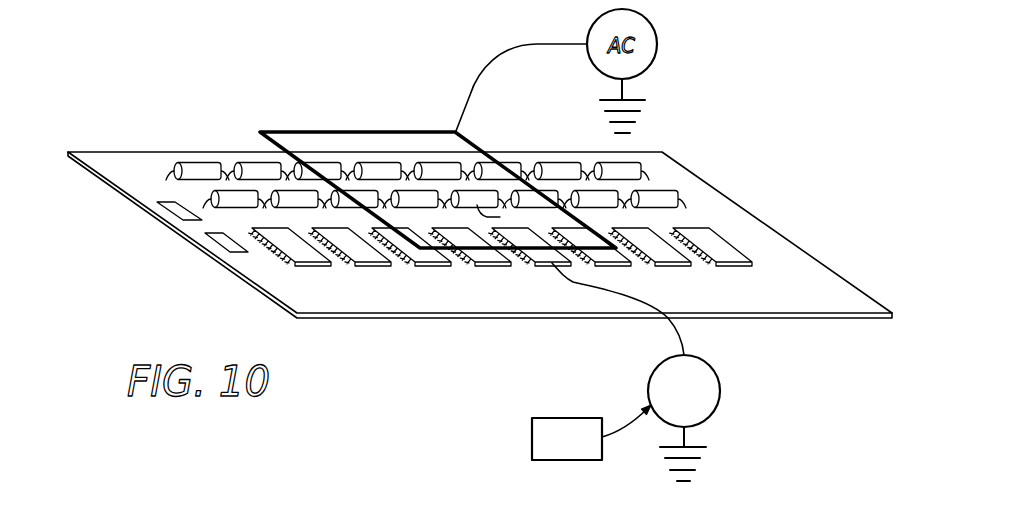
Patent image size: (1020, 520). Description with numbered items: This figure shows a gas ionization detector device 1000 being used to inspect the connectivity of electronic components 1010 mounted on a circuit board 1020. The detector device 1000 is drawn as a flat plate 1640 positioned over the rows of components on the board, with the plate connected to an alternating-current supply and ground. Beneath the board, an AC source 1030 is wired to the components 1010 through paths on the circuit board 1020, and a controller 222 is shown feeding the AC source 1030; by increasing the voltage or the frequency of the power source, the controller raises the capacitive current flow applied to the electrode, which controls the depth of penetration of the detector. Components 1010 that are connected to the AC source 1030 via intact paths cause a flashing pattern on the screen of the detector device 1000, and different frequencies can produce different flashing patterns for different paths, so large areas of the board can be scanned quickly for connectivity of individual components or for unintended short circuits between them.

The detector device 1000 is at (370, 84).
The electronic components 1010 is at (653, 197).
The circuit board 1020 is at (708, 212).
The AC source 1030 is at (718, 373).
The electrode plate 1640 is at (500, 217).
The controller 222 is at (567, 460).